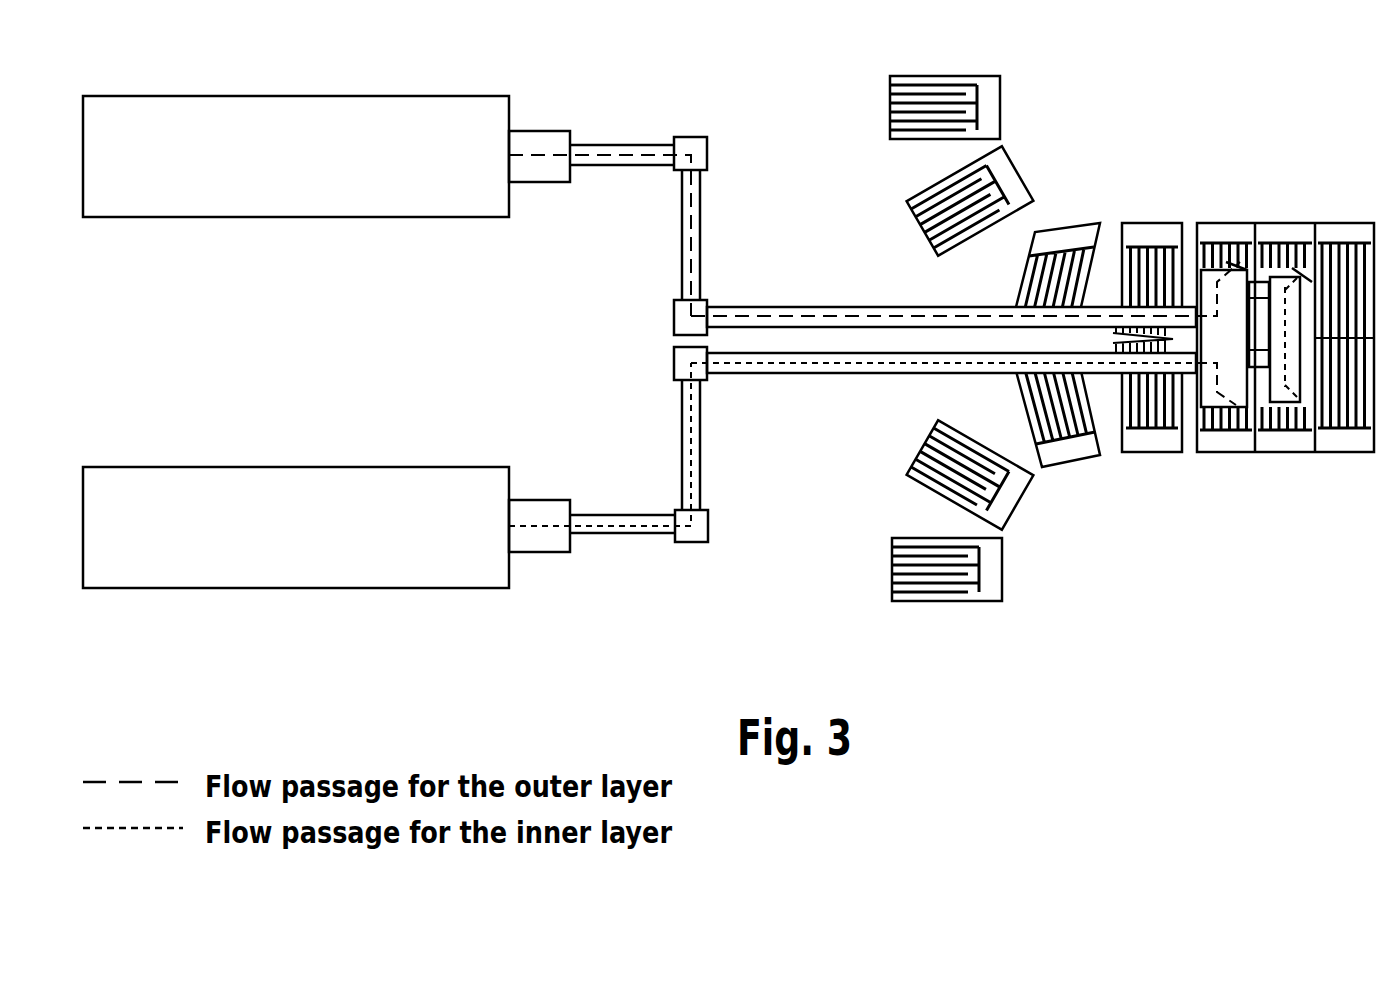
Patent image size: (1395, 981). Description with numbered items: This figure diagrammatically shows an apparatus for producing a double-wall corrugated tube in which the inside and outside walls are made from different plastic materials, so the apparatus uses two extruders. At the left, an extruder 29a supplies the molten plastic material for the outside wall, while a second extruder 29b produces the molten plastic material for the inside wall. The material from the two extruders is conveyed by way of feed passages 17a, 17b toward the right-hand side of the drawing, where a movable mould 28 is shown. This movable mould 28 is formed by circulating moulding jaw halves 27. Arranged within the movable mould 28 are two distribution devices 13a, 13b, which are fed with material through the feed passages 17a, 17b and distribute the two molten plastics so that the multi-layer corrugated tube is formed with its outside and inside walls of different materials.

The distribution device 13a is at (1230, 250).
The distribution device 13b is at (1292, 250).
The feed passage 17a is at (810, 317).
The feed passage 17b is at (773, 363).
The moulding jaw halves 27 is at (1353, 435).
The movable mould 28 is at (1132, 314).
The extruder 29a is at (262, 130).
The extruder 29b is at (262, 548).